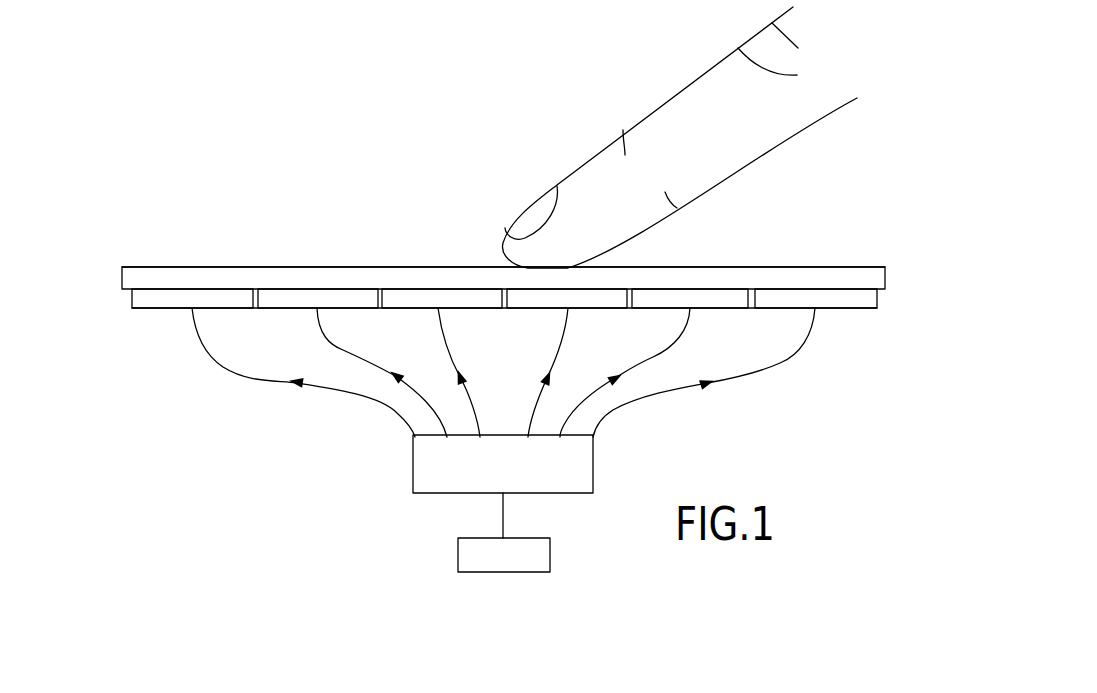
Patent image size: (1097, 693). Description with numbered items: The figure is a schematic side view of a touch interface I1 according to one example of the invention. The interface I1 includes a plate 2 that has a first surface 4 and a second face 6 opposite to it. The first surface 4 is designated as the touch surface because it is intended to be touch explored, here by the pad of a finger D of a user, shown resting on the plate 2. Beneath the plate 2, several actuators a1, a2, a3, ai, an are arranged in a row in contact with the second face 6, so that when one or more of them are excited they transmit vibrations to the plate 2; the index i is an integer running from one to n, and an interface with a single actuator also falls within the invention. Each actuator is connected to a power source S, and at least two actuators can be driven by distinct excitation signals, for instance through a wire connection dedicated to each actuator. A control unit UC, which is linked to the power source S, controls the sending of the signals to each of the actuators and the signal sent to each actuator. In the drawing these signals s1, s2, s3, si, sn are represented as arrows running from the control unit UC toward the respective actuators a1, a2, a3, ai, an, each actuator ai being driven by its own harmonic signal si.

The touch interface I1 is at (295, 170).
The finger D is at (703, 85).
The plate 2 is at (878, 280).
The first surface 4 is at (435, 268).
The second face 6 is at (150, 293).
The actuator a1 is at (188, 298).
The actuator a2 is at (272, 298).
The actuator a3 is at (398, 298).
The actuator ai is at (742, 297).
The actuator an is at (860, 298).
The harmonic signal s1 is at (303, 372).
The harmonic signal s2 is at (382, 372).
The harmonic signal s3 is at (466, 372).
The harmonic signal si is at (625, 372).
The harmonic signal sn is at (704, 372).
The control unit UC is at (432, 457).
The power source S is at (470, 553).